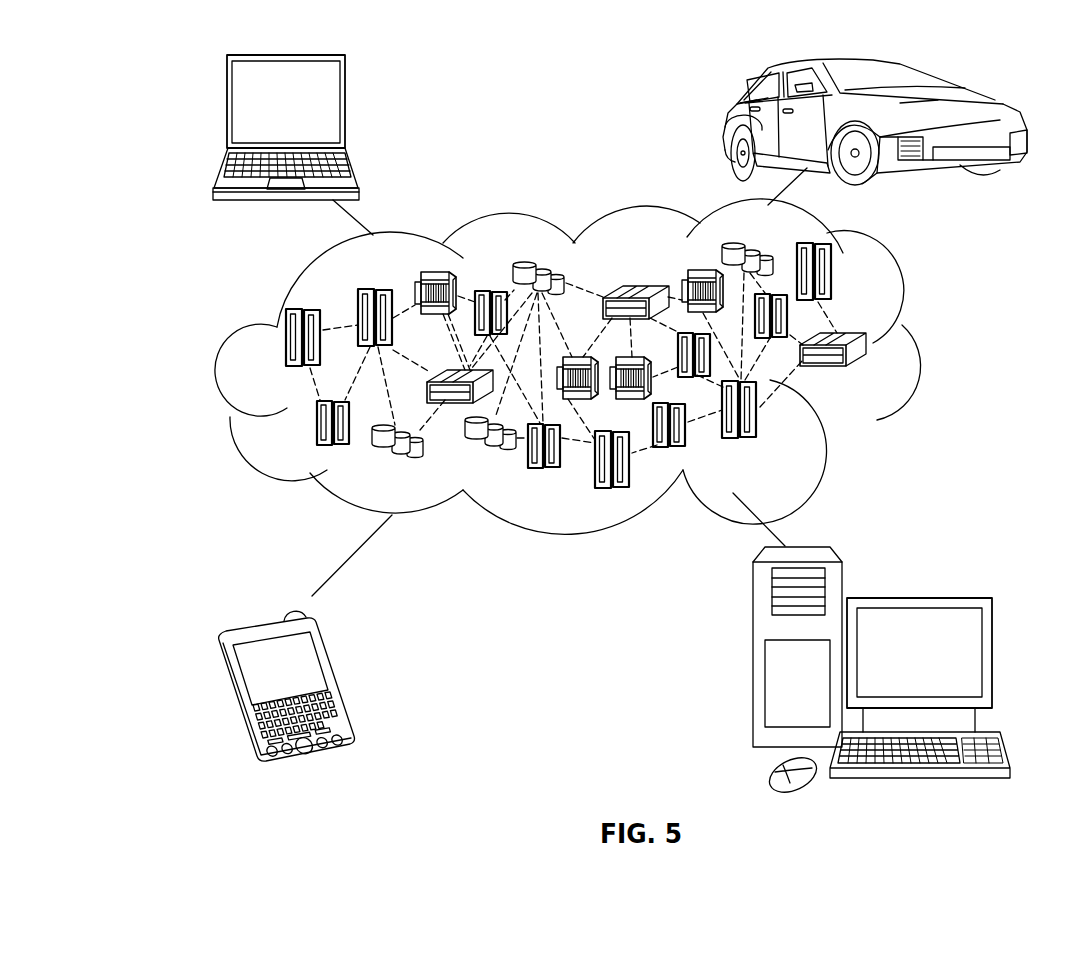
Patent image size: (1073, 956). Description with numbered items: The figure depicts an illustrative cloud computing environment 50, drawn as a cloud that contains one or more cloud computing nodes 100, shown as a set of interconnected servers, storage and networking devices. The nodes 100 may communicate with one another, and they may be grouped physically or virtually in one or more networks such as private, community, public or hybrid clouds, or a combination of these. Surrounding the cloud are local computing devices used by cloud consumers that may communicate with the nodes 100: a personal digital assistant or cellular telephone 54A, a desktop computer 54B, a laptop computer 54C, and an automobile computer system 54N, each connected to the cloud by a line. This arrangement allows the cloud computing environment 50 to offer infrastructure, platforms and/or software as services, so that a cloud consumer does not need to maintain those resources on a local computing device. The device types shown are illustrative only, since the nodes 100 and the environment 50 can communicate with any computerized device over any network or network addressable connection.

The cloud computing environment 50 is at (915, 345).
The cloud computing nodes 100 is at (872, 378).
The personal digital assistant or cellular telephone 54A is at (340, 681).
The desktop computer 54B is at (917, 598).
The laptop computer 54C is at (347, 111).
The automobile computer system 54N is at (726, 122).